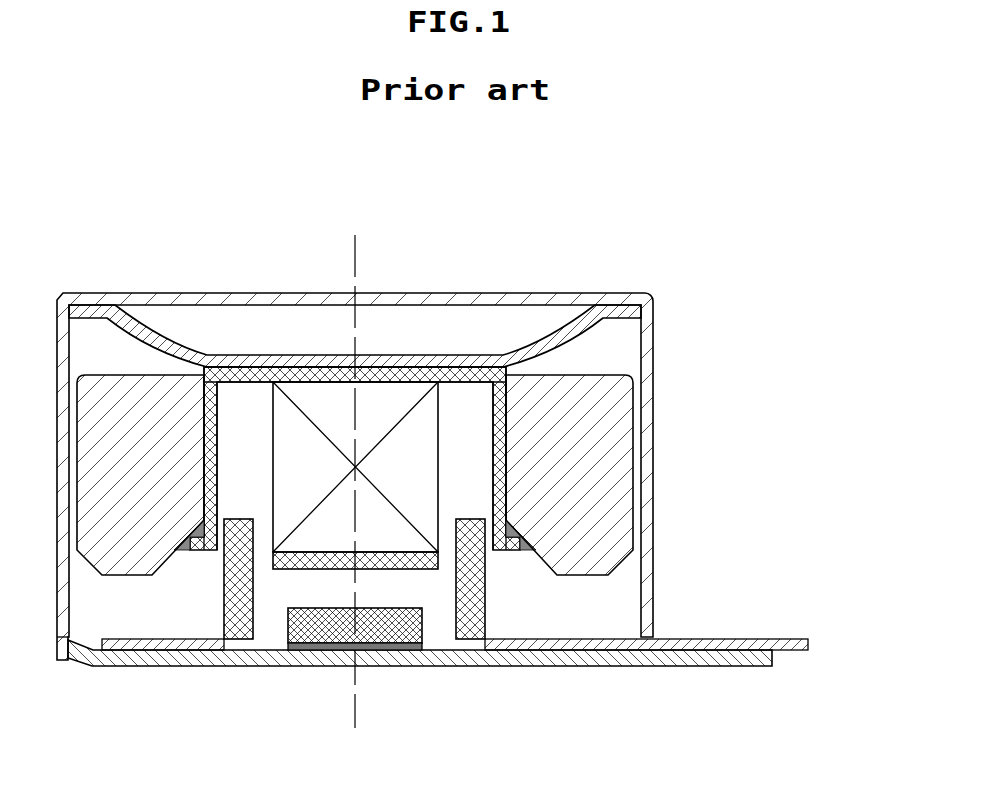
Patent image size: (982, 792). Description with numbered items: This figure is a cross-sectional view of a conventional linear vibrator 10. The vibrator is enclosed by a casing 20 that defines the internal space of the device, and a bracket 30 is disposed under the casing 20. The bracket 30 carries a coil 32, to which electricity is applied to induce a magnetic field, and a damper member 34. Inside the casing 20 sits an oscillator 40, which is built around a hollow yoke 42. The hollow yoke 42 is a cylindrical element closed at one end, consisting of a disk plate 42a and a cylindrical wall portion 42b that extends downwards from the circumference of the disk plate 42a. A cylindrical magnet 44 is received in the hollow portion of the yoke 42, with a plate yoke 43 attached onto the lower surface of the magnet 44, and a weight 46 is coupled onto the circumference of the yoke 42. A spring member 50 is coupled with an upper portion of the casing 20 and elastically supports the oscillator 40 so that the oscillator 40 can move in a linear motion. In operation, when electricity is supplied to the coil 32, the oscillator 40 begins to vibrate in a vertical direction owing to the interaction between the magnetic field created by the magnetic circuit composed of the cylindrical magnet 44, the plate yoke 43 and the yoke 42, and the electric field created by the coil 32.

The linear vibrator 10 is at (92, 180).
The casing 20 is at (520, 302).
The bracket 30 is at (527, 657).
The coil 32 is at (240, 622).
The damper member 34 is at (393, 632).
The oscillator 40 is at (479, 476).
The hollow yoke 42 is at (504, 447).
The disk plate 42a is at (470, 372).
The cylindrical wall portion 42b is at (502, 452).
The plate yoke 43 is at (417, 559).
The cylindrical magnet 44 is at (413, 485).
The weight 46 is at (580, 533).
The spring member 50 is at (158, 348).